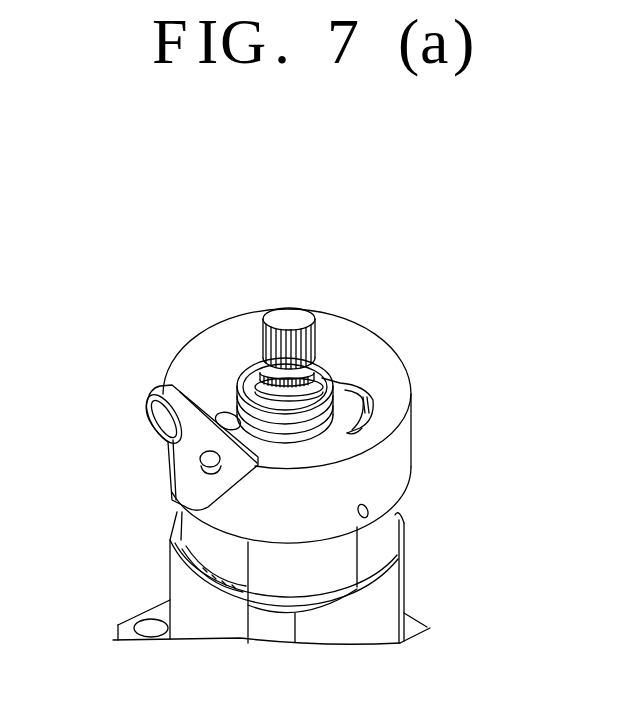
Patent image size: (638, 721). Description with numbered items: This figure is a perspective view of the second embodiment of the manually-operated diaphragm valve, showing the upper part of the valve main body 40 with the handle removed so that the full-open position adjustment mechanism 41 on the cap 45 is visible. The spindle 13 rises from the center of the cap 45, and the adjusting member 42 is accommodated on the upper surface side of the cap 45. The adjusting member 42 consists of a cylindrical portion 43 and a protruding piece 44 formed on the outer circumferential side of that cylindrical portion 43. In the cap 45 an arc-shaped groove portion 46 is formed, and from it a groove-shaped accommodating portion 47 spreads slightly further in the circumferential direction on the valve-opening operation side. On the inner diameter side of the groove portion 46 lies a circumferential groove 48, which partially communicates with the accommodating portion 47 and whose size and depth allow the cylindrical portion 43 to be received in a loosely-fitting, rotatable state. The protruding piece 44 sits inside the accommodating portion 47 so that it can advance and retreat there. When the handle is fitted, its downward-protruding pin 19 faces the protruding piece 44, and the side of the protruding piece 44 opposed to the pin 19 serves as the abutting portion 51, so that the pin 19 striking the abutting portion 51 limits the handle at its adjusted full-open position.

The spindle 13 is at (290, 316).
The pin 19 is at (293, 500).
The valve main body 40 is at (405, 560).
The full-open position adjustment mechanism 41 is at (365, 389).
The adjusting member 42 is at (264, 374).
The cylindrical portion 43 is at (348, 388).
The protruding piece 44 is at (375, 400).
The cap 45 is at (370, 468).
The groove portion 46 is at (165, 372).
The accommodating portion 47 is at (357, 387).
The circumferential groove 48 is at (201, 467).
The abutting portion 51 is at (372, 420).